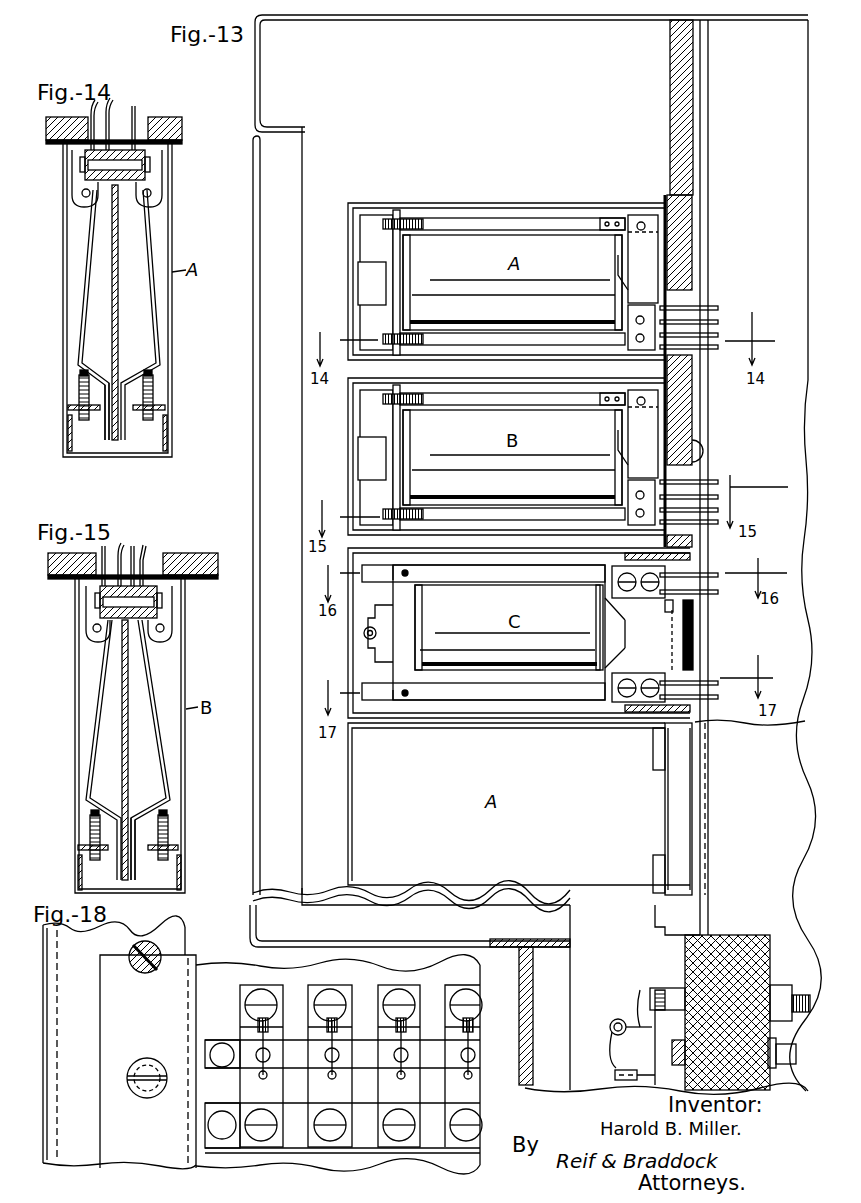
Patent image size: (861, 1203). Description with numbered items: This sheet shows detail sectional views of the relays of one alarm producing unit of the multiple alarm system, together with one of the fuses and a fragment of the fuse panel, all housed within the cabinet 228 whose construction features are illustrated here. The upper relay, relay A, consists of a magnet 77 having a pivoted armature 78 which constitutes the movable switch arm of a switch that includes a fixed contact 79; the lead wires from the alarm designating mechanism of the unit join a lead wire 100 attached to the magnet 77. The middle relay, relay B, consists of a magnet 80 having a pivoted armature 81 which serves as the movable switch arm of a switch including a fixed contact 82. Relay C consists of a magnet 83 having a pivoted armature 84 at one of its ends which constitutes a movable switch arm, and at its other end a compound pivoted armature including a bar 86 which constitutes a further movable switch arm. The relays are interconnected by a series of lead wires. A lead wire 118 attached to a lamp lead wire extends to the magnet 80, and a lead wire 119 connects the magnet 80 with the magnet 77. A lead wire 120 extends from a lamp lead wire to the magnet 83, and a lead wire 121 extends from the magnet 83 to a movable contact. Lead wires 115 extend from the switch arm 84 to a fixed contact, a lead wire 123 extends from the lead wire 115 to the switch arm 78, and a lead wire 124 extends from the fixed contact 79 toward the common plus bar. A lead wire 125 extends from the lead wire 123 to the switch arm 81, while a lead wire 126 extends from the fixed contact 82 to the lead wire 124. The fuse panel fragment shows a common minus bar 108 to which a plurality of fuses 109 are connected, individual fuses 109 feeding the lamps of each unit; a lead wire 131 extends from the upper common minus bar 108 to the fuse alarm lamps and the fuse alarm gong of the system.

In FIG. 13, the cabinet 228 is at (322, 198).
In FIG. 13, the magnet 77 is at (465, 262).
In FIG. 13, the pivoted armature 78 is at (418, 218).
In FIG. 14, the pivoted armature 78 is at (119, 338).
In FIG. 14, the fixed contact 79 is at (103, 435).
In FIG. 13, the magnet 80 is at (442, 433).
In FIG. 13, the pivoted armature 81 is at (372, 424).
In FIG. 15, the pivoted armature 81 is at (130, 751).
In FIG. 13, the fixed contact 82 is at (372, 512).
In FIG. 15, the fixed contact 82 is at (137, 880).
In FIG. 13, the magnet 83 is at (395, 702).
In FIG. 13, the pivoted armature 84 is at (375, 687).
In FIG. 13, the bar 86 is at (380, 572).
In FIG. 13, the lead wire 100 is at (715, 305).
In FIG. 14, the lead wire 100 is at (140, 109).
In FIG. 13, the common minus bar 108 is at (678, 1040).
In FIG. 18, the common minus bar 108 is at (215, 1073).
In FIG. 13, the fuse 109 is at (660, 1088).
In FIG. 18, the fuse 109 is at (255, 1050).
In FIG. 13, the lead wire 115 is at (700, 722).
In FIG. 13, the lead wire 118 is at (716, 480).
In FIG. 15, the lead wire 118 is at (147, 546).
In FIG. 13, the lead wire 119 is at (716, 352).
In FIG. 14, the lead wire 119 is at (80, 115).
In FIG. 15, the lead wire 119 is at (63, 579).
In FIG. 13, the lead wire 120 is at (716, 596).
In FIG. 13, the lead wire 121 is at (716, 680).
In FIG. 13, the lead wire 123 is at (718, 320).
In FIG. 14, the lead wire 123 is at (113, 110).
In FIG. 13, the lead wire 124 is at (720, 333).
In FIG. 14, the lead wire 124 is at (100, 104).
In FIG. 13, the lead wire 125 is at (718, 510).
In FIG. 15, the lead wire 125 is at (122, 545).
In FIG. 13, the lead wire 126 is at (718, 495).
In FIG. 15, the lead wire 126 is at (135, 547).
In FIG. 13, the lead wire 131 is at (778, 1068).